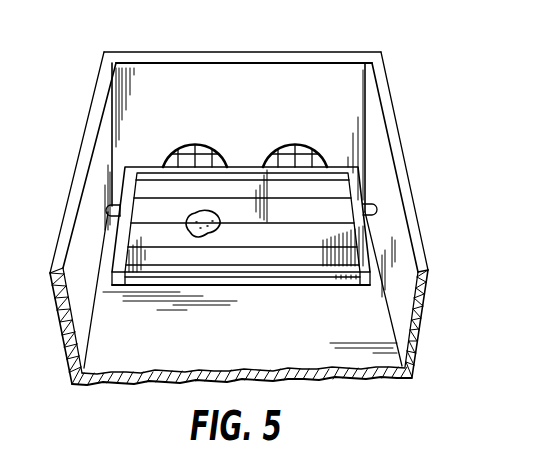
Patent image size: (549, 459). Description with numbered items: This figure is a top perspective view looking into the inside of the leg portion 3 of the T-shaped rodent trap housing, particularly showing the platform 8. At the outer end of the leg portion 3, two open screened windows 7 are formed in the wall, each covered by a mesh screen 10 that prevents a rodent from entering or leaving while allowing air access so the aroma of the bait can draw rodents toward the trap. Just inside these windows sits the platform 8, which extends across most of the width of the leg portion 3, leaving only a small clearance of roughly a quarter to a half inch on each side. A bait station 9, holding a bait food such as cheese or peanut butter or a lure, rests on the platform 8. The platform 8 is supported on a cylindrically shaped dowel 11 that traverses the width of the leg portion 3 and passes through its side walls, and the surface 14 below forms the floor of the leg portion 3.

The leg portion 3 is at (428, 305).
The open screened window 7 is at (185, 147).
The platform 8 is at (338, 237).
The bait station 9 is at (195, 238).
The mesh screen 10 is at (265, 164).
The cylindrically shaped dowel 11 is at (107, 211).
The bottom wall 14 is at (255, 352).